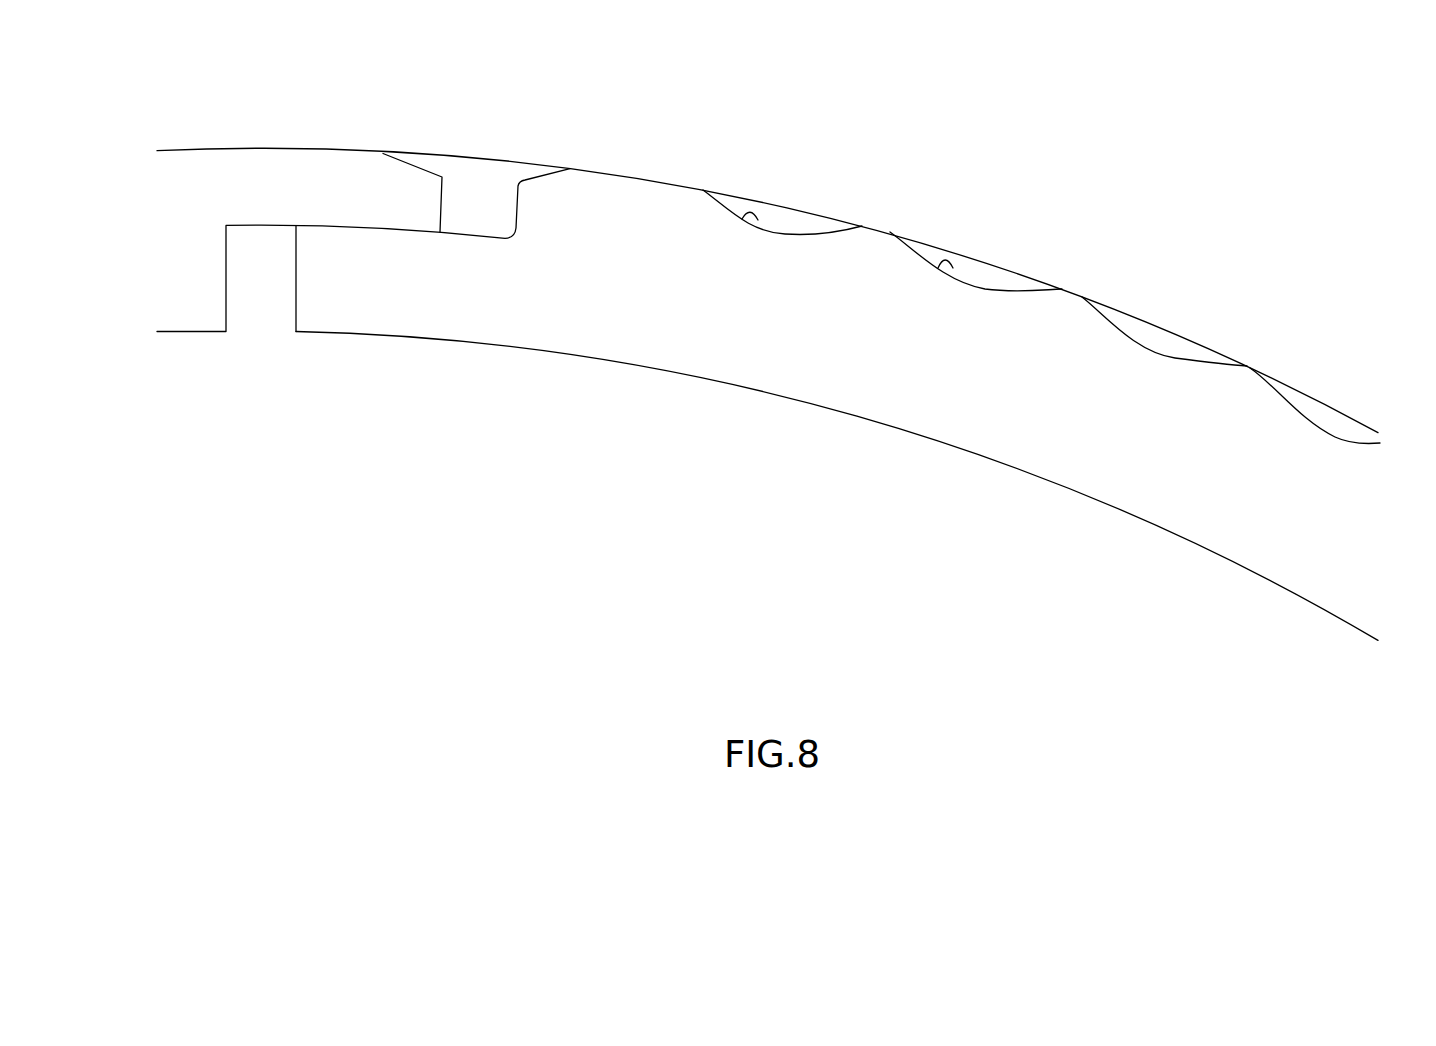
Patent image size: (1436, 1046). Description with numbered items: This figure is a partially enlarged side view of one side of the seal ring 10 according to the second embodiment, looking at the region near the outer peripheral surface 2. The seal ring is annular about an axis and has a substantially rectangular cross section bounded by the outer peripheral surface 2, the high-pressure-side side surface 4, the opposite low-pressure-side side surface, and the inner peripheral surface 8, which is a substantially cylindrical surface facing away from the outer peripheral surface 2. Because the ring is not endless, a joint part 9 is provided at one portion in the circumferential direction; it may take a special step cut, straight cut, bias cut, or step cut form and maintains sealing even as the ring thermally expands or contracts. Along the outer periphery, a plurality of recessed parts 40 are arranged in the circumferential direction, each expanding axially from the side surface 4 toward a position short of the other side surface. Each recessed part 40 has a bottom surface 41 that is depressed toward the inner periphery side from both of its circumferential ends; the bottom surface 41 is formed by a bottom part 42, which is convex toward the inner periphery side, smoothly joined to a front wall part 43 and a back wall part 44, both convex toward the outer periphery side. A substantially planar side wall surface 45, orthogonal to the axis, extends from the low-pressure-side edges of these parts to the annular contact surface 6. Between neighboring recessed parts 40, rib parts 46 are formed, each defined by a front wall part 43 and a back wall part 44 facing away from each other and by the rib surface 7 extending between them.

The outer peripheral surface 2 is at (1366, 400).
The high-pressure-side side surface 4 is at (393, 290).
The contact surface 6 is at (1307, 395).
The rib surface 7 is at (873, 226).
The inner peripheral surface 8 is at (501, 347).
The joint part 9 is at (332, 187).
The seal ring 10 is at (977, 117).
The recessed part 40 is at (792, 190).
The bottom surface 41 is at (764, 217).
The bottom part 42 is at (741, 221).
The front wall part 43 is at (820, 216).
The back wall part 44 is at (722, 200).
The side wall surface 45 is at (780, 218).
The rib part 46 is at (872, 244).